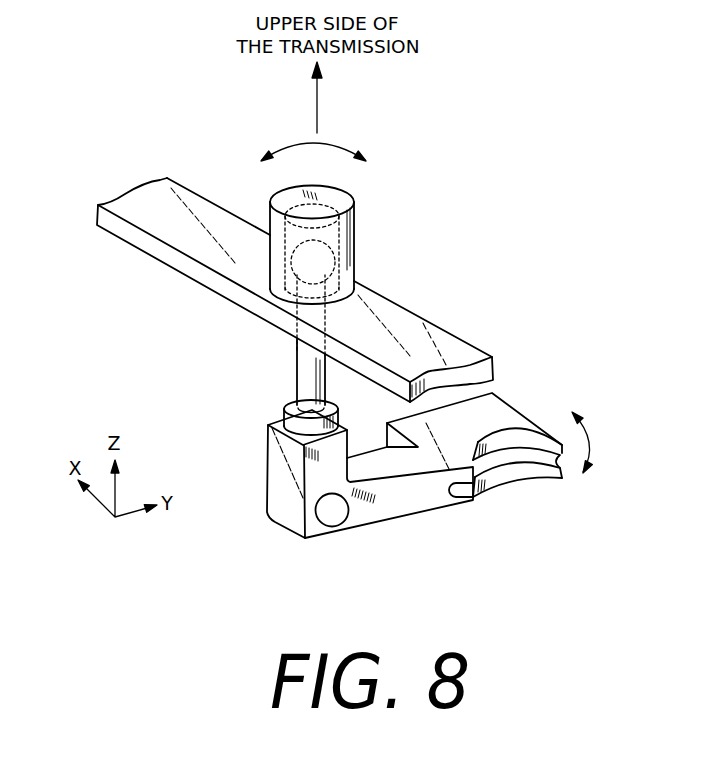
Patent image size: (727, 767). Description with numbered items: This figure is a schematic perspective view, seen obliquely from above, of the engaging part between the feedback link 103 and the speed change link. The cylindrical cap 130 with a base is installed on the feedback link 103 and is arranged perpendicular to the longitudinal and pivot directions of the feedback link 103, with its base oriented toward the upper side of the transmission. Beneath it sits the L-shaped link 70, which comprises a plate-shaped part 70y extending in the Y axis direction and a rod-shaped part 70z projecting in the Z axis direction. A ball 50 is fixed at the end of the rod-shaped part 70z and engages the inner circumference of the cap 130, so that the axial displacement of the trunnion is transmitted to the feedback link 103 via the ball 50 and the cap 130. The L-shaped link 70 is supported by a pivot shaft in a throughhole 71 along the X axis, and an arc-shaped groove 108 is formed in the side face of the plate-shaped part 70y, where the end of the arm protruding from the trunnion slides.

The ball 50 is at (293, 270).
The L-shaped link 70 is at (383, 522).
The plate-shaped part 70y is at (493, 417).
The rod-shaped part 70z is at (297, 364).
The throughhole 71 is at (332, 512).
The feedback link 103 is at (400, 315).
The arc-shaped groove 108 is at (503, 458).
The cylindrical cap 130 is at (347, 204).